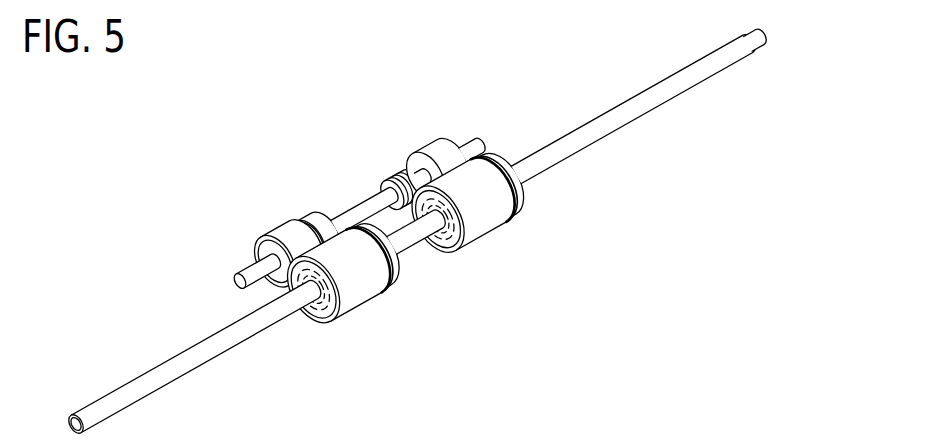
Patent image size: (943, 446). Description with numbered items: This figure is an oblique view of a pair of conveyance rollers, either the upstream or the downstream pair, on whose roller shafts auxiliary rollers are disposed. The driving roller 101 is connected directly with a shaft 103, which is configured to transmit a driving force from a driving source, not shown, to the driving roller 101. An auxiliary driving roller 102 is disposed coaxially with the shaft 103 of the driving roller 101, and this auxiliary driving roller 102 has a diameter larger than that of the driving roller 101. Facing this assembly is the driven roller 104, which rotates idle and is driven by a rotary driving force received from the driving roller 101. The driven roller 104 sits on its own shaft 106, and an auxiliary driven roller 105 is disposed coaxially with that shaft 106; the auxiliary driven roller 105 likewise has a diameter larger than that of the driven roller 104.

The driving roller 101 is at (474, 240).
The auxiliary driving roller 102 is at (511, 218).
The shaft 103 is at (247, 340).
The driven roller 104 is at (408, 160).
The auxiliary driven roller 105 is at (430, 147).
The shaft 106 is at (247, 272).